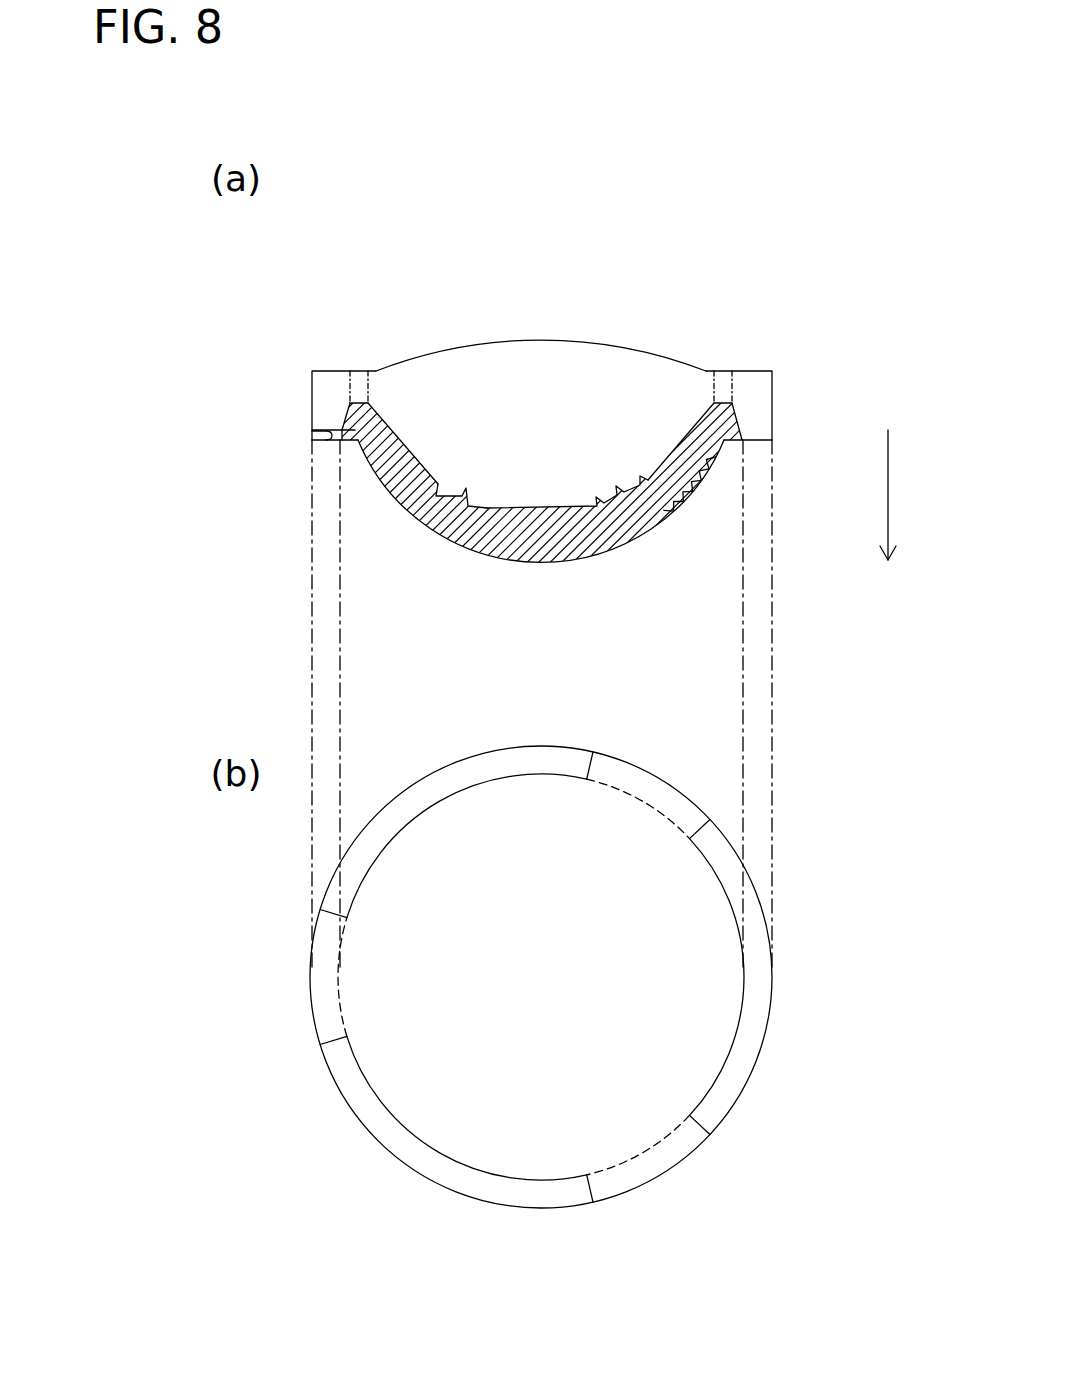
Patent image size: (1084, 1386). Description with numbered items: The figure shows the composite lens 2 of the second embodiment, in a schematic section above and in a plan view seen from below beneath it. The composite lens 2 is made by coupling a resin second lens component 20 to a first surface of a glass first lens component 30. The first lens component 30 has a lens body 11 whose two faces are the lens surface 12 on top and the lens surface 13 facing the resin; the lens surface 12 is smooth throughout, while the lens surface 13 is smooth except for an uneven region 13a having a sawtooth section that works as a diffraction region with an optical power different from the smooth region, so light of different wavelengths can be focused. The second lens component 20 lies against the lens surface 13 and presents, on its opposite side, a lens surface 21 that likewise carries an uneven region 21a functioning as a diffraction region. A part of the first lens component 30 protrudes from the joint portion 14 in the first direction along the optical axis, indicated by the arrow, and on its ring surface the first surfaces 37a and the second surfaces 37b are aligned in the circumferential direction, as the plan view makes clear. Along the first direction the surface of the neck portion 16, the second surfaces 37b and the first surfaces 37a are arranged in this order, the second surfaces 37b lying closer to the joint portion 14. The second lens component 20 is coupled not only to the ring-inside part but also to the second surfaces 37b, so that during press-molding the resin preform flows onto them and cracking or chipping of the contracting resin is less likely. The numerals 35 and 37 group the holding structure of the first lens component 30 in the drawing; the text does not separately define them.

The composite lens 2 is at (562, 290).
The lens body 11 is at (693, 370).
The lens surface (second lens surface) 12 is at (432, 347).
The lens surface (first lens surface) 13 is at (390, 478).
The uneven region 13a is at (455, 512).
The joint portion 14 is at (714, 403).
The neck portion 16 is at (722, 371).
The second lens component 20 is at (582, 552).
The lens surface 21 is at (530, 563).
The uneven region 21a is at (689, 516).
The first lens component 30 is at (675, 249).
The holding portion 35 is at (790, 301).
The ring member 37 is at (767, 371).
The first surfaces 37a is at (763, 440).
The second surfaces 37b is at (317, 440).